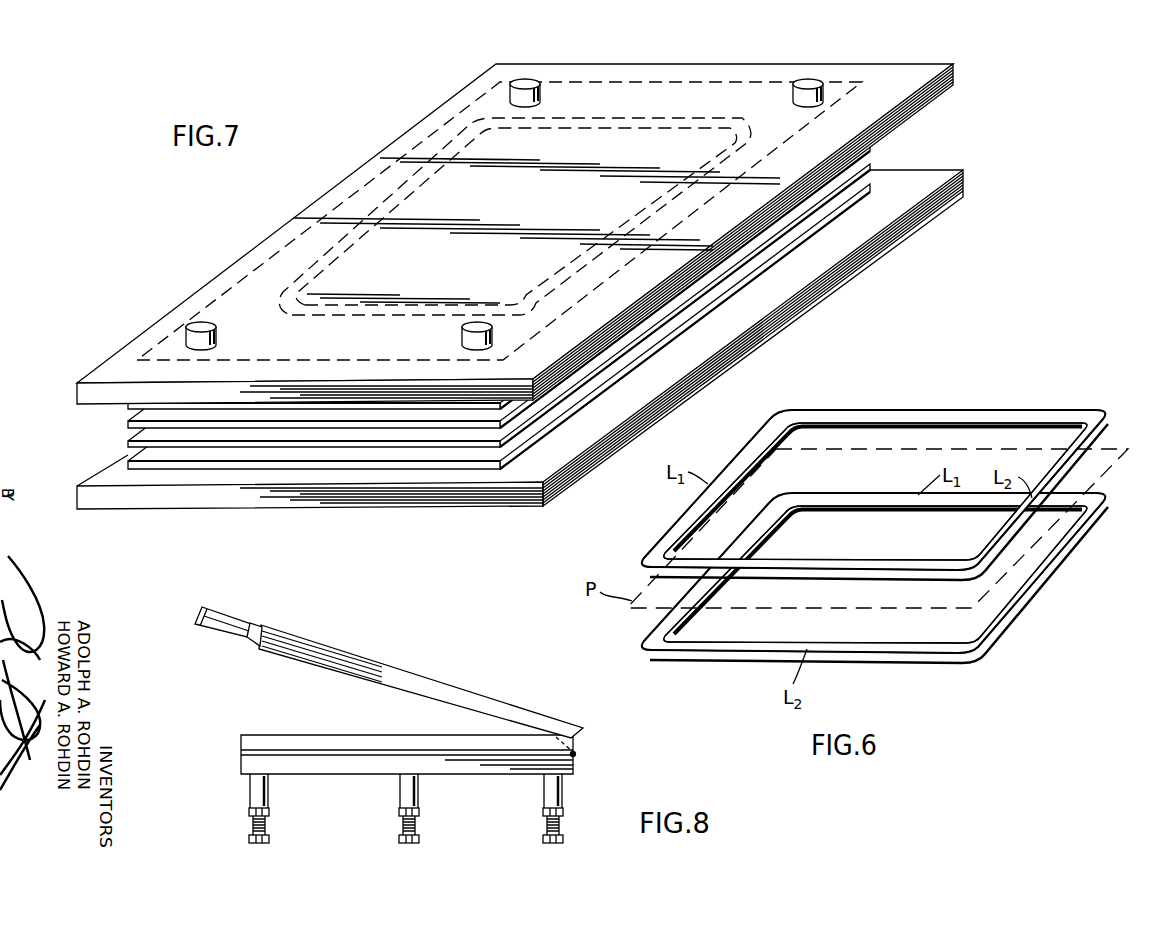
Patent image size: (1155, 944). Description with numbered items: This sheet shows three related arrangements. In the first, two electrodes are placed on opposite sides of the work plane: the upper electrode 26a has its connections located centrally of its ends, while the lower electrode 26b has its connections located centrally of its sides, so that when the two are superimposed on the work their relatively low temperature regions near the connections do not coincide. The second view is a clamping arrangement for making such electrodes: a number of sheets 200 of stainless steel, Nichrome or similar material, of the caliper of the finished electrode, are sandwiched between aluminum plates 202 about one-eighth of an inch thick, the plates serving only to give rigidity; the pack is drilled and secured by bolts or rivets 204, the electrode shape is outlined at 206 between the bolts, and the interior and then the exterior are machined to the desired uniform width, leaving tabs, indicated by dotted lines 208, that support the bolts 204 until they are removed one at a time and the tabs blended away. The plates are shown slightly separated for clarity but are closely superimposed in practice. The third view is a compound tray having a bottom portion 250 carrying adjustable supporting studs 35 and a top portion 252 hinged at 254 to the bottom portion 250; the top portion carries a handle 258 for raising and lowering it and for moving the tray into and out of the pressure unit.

In FIG. 7, the sheets 200 is at (128, 463).
In FIG. 7, the plates 202 is at (906, 78).
In FIG. 7, the bolts or rivets 204 is at (530, 83).
In FIG. 7, the electrode outline 206 is at (423, 187).
In FIG. 7, the tabs 208 is at (493, 120).
In FIG. 6, the upper electrode 26a is at (860, 411).
In FIG. 6, the lower electrode 26b is at (883, 654).
In FIG. 8, the bottom portion 250 is at (337, 742).
In FIG. 8, the top portion 252 is at (443, 681).
In FIG. 8, the hinge 254 is at (577, 755).
In FIG. 8, the handle 258 is at (234, 637).
In FIG. 8, the adjustable supporting studs 35 is at (274, 806).